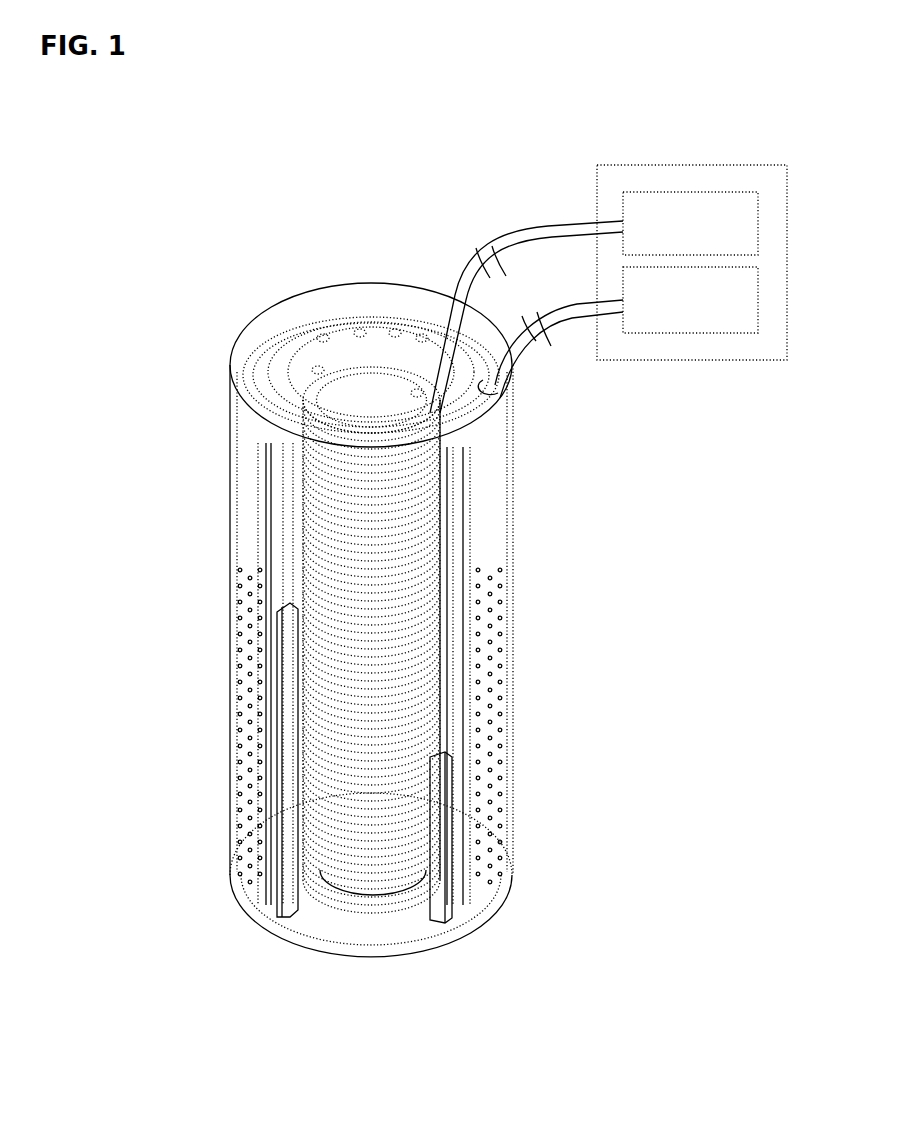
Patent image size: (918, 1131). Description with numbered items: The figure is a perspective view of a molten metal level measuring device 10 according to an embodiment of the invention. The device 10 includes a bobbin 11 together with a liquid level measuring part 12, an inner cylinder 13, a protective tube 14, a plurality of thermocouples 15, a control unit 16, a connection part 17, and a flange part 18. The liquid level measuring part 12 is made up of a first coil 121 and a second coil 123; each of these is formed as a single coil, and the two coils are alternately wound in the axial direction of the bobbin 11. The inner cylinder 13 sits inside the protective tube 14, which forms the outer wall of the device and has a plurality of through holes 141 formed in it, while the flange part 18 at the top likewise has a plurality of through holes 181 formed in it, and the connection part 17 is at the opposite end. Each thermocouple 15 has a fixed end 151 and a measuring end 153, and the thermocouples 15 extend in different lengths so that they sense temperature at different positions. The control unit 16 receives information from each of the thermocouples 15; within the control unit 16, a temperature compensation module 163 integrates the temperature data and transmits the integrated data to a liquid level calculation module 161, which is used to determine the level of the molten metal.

The molten metal level measuring device 10 is at (254, 238).
The bobbin 11 is at (392, 892).
The liquid level measuring part 12 is at (351, 831).
The first coil 121 is at (328, 868).
The second coil 123 is at (316, 843).
The inner cylinder 13 is at (292, 522).
The protective tube 14 is at (399, 628).
The through holes 141 is at (495, 688).
The thermocouple 15 is at (535, 563).
The fixed end 151 is at (510, 402).
The measuring end 153 is at (465, 480).
The control unit 16 is at (723, 262).
The liquid level calculation module 161 is at (758, 222).
The temperature compensation module 163 is at (758, 303).
The connection part 17 is at (248, 886).
The flange part 18 is at (232, 388).
The through holes 181 is at (320, 365).